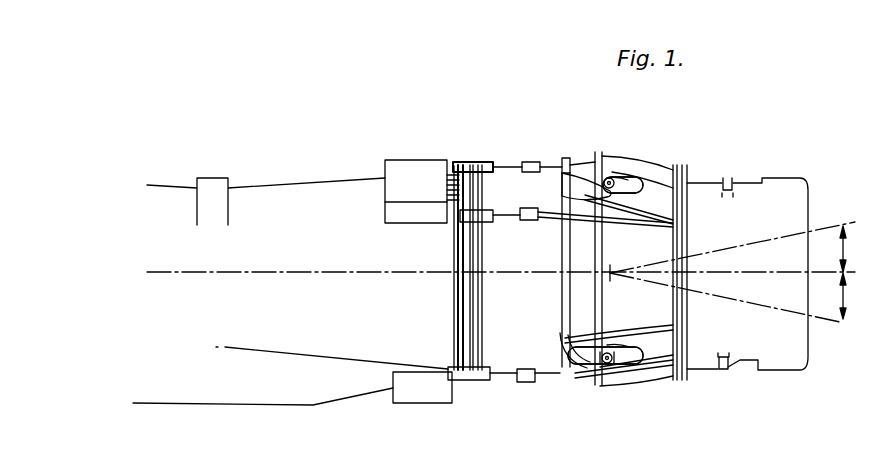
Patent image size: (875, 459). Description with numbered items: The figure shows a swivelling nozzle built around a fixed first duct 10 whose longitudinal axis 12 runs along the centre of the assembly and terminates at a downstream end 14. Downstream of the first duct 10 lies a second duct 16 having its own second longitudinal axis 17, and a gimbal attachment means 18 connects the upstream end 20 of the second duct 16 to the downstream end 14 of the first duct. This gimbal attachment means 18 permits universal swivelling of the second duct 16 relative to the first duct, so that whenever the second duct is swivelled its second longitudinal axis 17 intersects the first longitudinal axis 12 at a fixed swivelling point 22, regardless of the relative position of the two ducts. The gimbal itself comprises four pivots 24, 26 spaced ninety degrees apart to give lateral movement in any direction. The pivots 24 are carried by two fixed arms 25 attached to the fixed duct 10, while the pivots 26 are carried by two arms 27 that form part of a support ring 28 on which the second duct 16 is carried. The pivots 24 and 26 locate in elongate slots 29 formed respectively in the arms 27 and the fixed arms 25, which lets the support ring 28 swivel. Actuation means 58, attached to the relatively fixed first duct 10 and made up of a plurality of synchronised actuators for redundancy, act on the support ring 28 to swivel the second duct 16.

The fixed first duct 10 is at (285, 192).
The longitudinal axis 12 is at (382, 273).
The downstream end 14 is at (590, 312).
The second duct 16 is at (743, 361).
The second longitudinal axis 17 is at (820, 323).
The gimbal attachment means 18 is at (608, 366).
The upstream end 20 is at (627, 367).
The fixed swivelling point 22 is at (612, 271).
The pivots 24 is at (608, 181).
The fixed arms 25 is at (572, 182).
The pivots 26 is at (613, 368).
The arms 27 is at (647, 182).
The support ring 28 is at (605, 270).
The elongate slots 29 is at (628, 178).
The actuation means 58 is at (477, 165).